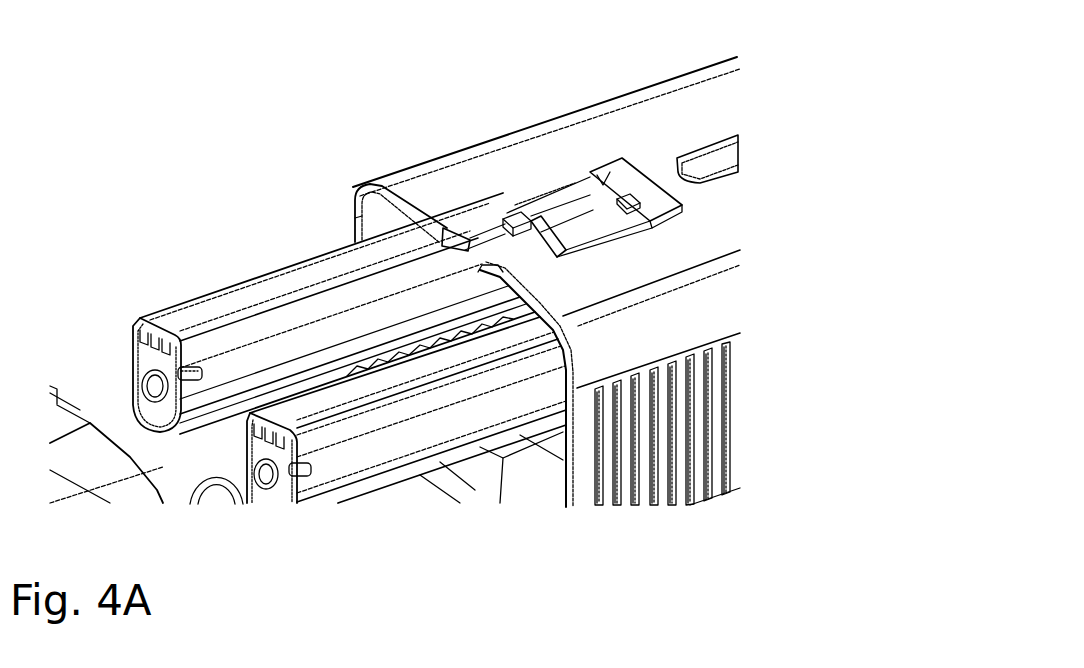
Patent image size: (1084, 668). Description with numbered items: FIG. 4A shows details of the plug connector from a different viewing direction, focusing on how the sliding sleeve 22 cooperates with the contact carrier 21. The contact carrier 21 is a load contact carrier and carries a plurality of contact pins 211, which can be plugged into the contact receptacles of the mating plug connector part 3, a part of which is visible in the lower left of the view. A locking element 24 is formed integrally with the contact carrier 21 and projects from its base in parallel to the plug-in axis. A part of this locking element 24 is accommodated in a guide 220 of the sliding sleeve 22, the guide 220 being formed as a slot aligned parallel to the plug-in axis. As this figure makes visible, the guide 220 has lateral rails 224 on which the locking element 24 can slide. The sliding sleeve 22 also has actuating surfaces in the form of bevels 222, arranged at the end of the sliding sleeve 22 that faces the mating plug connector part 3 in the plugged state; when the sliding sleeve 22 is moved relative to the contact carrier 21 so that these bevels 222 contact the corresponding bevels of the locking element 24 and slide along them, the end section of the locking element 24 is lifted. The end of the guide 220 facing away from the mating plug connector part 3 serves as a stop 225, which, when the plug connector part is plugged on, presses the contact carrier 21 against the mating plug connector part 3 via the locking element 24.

The mating plug connector part 3 is at (72, 385).
The contact carrier 21 is at (348, 328).
The contact pins 211 is at (231, 316).
The sliding sleeve 22 is at (555, 259).
The bevels 222 is at (466, 222).
The lateral rails 224 is at (540, 213).
The guide 220 is at (560, 183).
The locking element 24 is at (592, 207).
The stop 225 is at (630, 163).